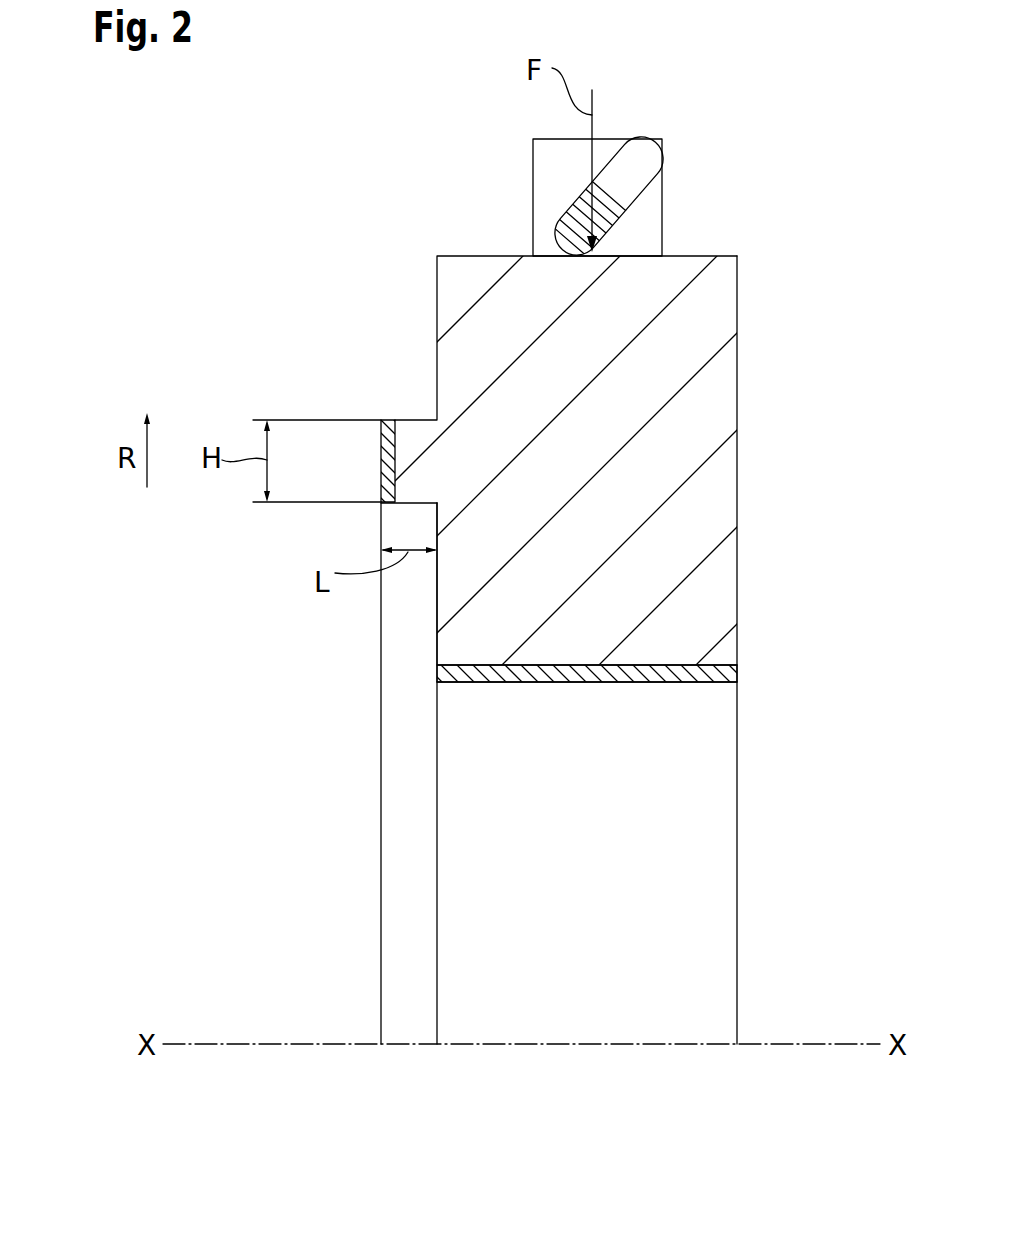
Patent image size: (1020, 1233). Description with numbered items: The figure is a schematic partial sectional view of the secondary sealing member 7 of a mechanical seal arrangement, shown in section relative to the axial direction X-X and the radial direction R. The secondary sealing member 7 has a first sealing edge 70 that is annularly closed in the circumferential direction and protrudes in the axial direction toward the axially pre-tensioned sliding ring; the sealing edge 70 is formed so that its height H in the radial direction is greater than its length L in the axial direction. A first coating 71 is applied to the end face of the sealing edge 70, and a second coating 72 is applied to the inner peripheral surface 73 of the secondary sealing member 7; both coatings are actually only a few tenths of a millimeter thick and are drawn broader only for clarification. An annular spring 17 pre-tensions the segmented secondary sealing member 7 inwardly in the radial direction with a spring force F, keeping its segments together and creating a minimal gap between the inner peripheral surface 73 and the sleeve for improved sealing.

The secondary sealing member 7 is at (747, 216).
The annular spring 17 is at (623, 178).
The first sealing edge 70 is at (412, 442).
The first coating 71 is at (383, 460).
The second coating 72 is at (715, 676).
The inner peripheral surface 73 is at (677, 684).